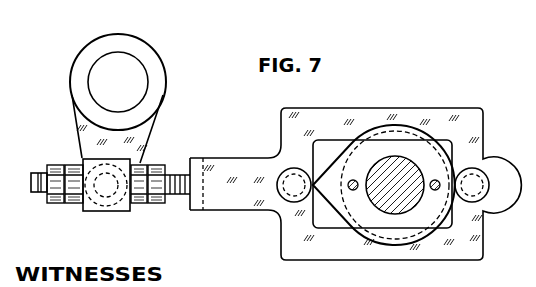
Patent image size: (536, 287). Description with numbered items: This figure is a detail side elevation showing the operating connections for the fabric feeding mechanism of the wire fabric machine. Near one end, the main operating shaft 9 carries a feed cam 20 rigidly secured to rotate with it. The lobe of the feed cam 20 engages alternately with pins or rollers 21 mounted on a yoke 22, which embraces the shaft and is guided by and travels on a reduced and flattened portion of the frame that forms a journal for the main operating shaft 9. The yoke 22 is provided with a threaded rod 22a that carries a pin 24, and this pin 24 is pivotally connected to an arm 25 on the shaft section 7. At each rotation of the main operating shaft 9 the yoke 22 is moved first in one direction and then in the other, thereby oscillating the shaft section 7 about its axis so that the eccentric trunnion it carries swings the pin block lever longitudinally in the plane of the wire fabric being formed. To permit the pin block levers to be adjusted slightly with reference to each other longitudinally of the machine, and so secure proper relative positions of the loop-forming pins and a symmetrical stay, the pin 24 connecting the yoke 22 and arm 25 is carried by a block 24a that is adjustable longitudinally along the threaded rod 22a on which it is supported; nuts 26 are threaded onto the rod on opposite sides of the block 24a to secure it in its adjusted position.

The shaft section 7 is at (118, 82).
The main operating shaft 9 is at (373, 264).
The feed cam 20 is at (345, 235).
The pins or rollers 21 is at (285, 197).
The yoke 22 is at (450, 115).
The threaded rod 22a is at (176, 177).
The pin 24 is at (112, 194).
The block 24a is at (82, 212).
The arm 25 is at (152, 127).
The nuts 26 is at (72, 166).